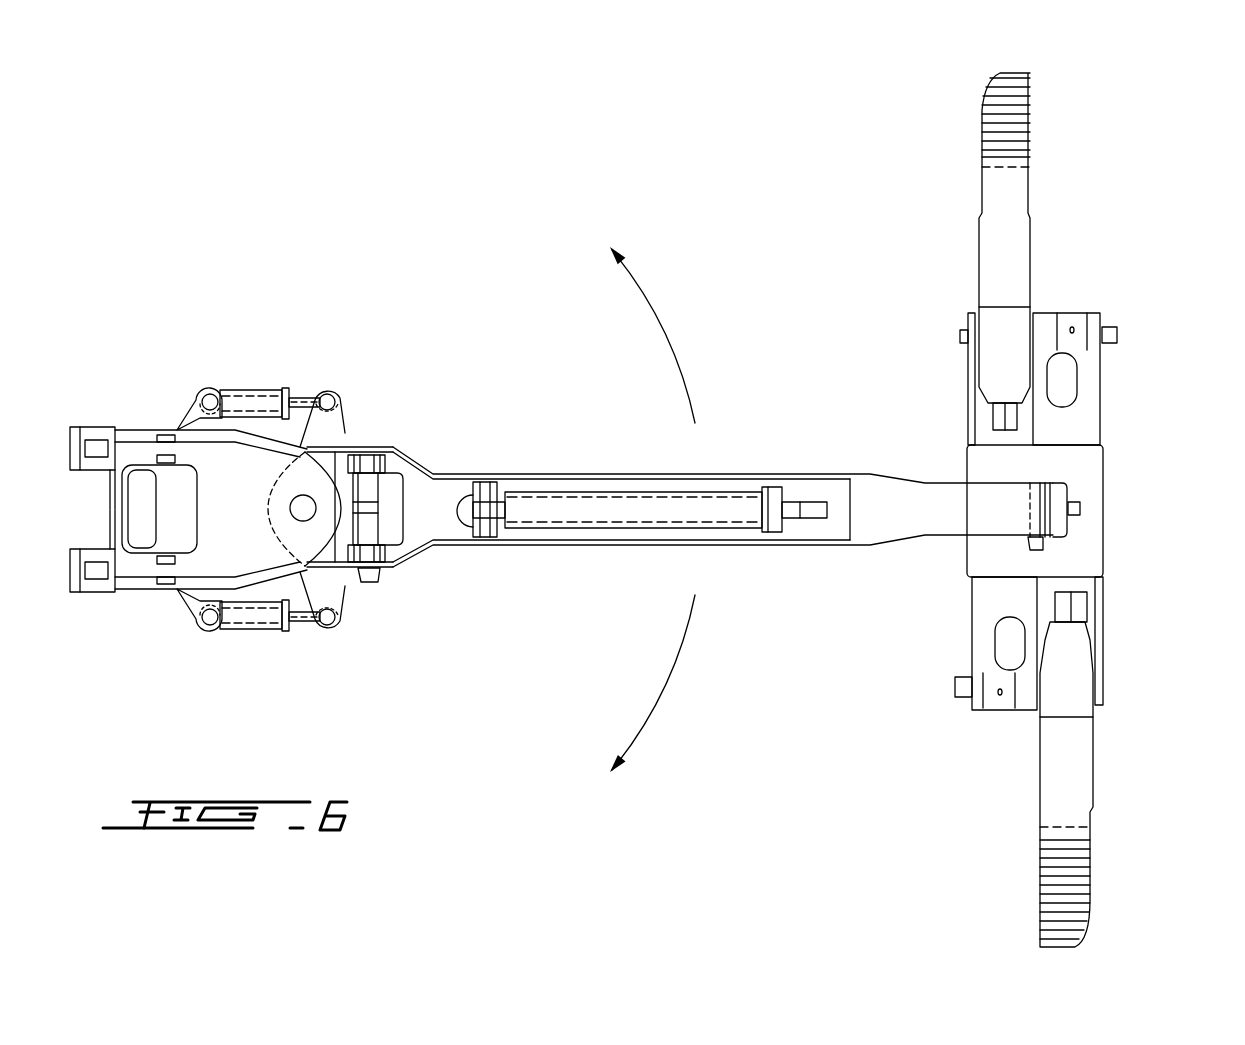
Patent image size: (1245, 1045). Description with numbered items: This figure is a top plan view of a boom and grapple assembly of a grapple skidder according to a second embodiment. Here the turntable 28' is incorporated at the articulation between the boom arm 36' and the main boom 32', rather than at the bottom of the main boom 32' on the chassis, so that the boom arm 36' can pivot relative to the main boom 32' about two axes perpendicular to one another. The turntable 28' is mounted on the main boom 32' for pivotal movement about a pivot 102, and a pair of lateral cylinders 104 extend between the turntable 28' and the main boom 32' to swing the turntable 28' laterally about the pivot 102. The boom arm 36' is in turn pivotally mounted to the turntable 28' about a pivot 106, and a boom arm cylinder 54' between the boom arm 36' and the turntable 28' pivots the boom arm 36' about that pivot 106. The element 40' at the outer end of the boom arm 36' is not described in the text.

The turntable 28' is at (330, 478).
The main boom 32' is at (188, 551).
The boom arm 36' is at (736, 470).
The tool mount 40' is at (1085, 510).
The boom arm cylinder 54' is at (666, 474).
The pivot 102 is at (306, 505).
The lateral cylinders 104 is at (253, 398).
The pivot 106 is at (375, 583).